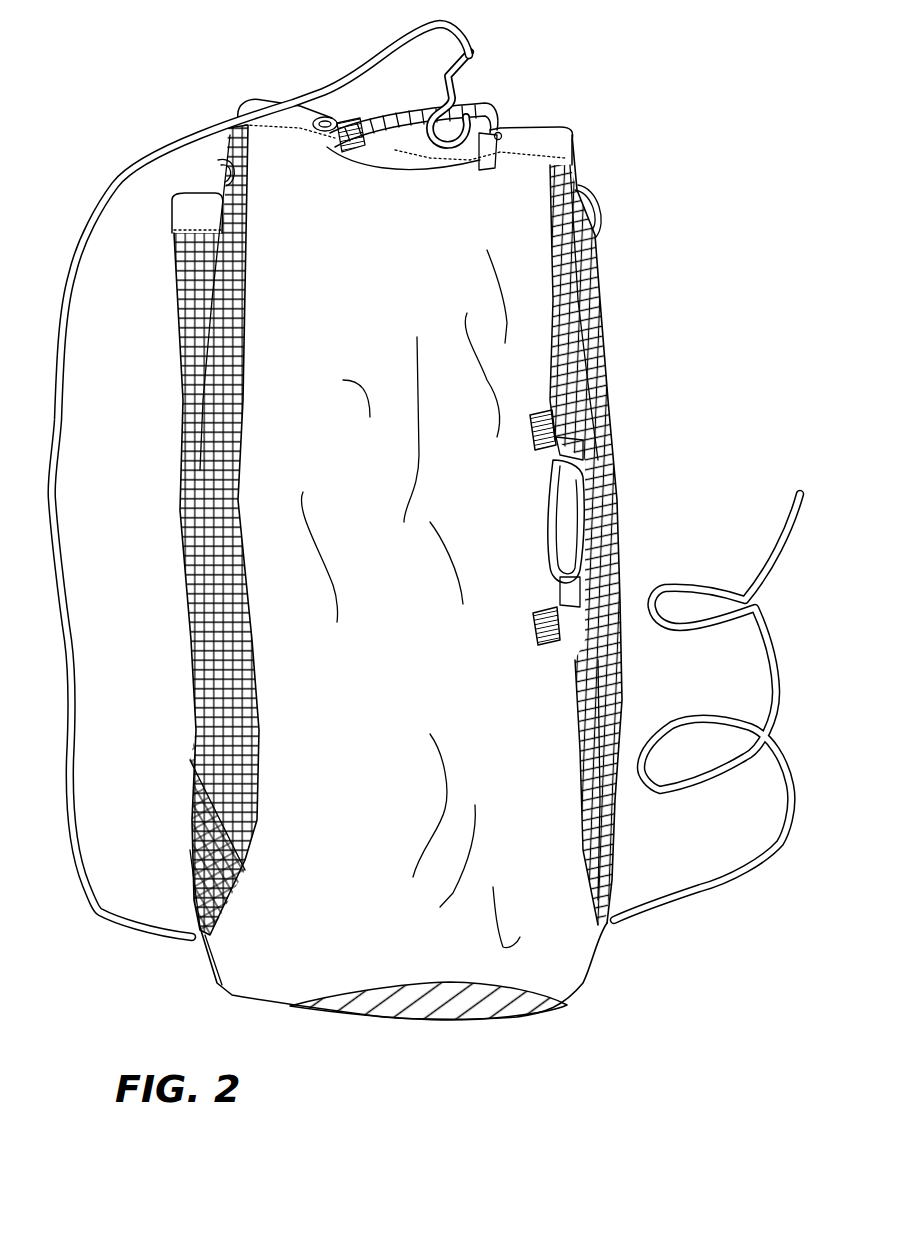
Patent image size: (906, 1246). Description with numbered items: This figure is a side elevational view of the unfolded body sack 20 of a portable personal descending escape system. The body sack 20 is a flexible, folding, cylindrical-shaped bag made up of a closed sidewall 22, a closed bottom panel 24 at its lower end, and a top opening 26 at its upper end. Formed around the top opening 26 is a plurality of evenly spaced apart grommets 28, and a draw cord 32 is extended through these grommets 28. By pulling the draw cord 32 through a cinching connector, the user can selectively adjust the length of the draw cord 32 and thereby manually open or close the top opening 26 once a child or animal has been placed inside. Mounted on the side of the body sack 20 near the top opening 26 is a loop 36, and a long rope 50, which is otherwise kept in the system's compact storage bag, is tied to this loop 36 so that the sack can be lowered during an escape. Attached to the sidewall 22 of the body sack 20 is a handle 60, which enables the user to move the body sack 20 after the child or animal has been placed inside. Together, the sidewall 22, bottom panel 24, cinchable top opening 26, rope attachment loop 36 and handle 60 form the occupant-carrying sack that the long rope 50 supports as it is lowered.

The body sack 20 is at (592, 155).
The sidewall 22 is at (418, 314).
The bottom panel 24 is at (501, 1010).
The top opening 26 is at (305, 100).
The grommets 28 is at (328, 150).
The draw cord 32 is at (402, 115).
The loop 36 is at (485, 107).
The long rope 50 is at (124, 165).
The handle 60 is at (582, 506).